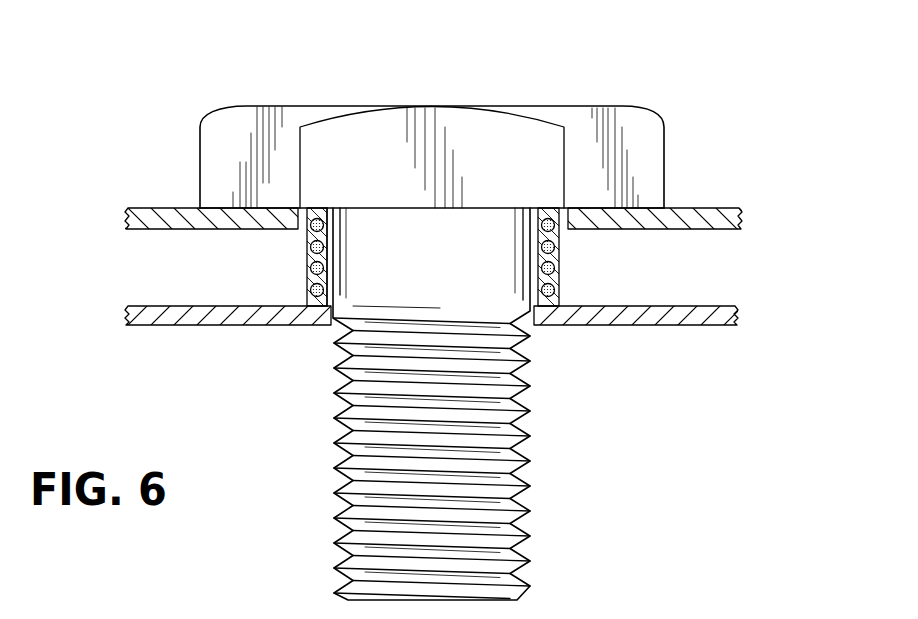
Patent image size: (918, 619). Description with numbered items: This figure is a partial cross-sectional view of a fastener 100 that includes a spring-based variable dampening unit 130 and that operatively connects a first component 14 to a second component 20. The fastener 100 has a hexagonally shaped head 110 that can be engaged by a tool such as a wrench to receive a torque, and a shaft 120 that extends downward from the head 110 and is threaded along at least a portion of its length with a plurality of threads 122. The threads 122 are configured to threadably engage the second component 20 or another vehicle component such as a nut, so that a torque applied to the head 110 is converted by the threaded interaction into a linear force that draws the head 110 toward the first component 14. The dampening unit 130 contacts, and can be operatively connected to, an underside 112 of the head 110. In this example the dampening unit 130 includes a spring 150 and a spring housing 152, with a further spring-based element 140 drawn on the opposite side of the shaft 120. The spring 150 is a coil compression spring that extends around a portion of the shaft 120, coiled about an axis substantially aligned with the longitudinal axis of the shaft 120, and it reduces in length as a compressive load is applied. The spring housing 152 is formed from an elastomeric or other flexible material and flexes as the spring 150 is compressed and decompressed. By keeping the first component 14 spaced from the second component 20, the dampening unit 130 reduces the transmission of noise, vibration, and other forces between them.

The first component 14 is at (167, 207).
The second component 20 is at (678, 327).
The fastener 100 is at (233, 72).
The head 110 is at (647, 160).
The underside 112 is at (605, 208).
The shaft 120 is at (403, 404).
The threads 122 is at (487, 482).
The dampening unit 130 is at (419, 287).
The second seal 140 is at (540, 307).
The spring 150 is at (307, 272).
The spring housing 152 is at (330, 244).